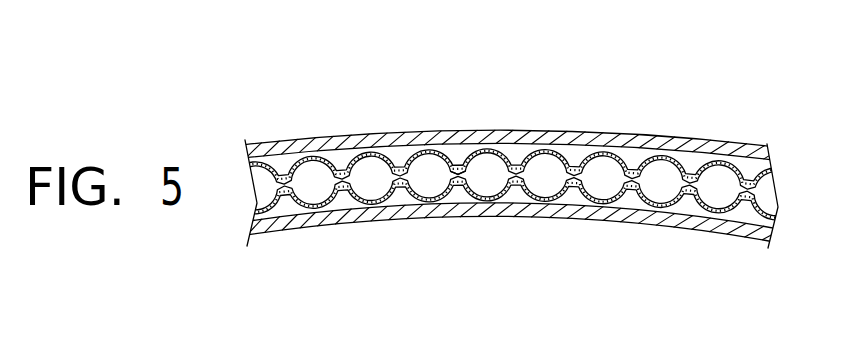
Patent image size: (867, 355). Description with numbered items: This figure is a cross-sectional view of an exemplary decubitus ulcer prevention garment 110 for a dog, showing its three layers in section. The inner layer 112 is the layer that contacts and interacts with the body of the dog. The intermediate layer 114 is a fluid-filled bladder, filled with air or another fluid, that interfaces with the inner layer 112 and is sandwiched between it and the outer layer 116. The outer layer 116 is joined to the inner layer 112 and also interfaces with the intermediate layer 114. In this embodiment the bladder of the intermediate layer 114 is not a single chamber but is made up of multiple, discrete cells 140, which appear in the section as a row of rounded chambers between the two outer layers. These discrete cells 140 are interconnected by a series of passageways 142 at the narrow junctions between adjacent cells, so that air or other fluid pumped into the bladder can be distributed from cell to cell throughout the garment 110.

The decubitus ulcer prevention garment 110 is at (712, 62).
The inner layer 112 is at (349, 229).
The intermediate layer 114 is at (280, 158).
The outer layer 116 is at (622, 133).
The cells 140 is at (605, 182).
The passageways 142 is at (455, 166).